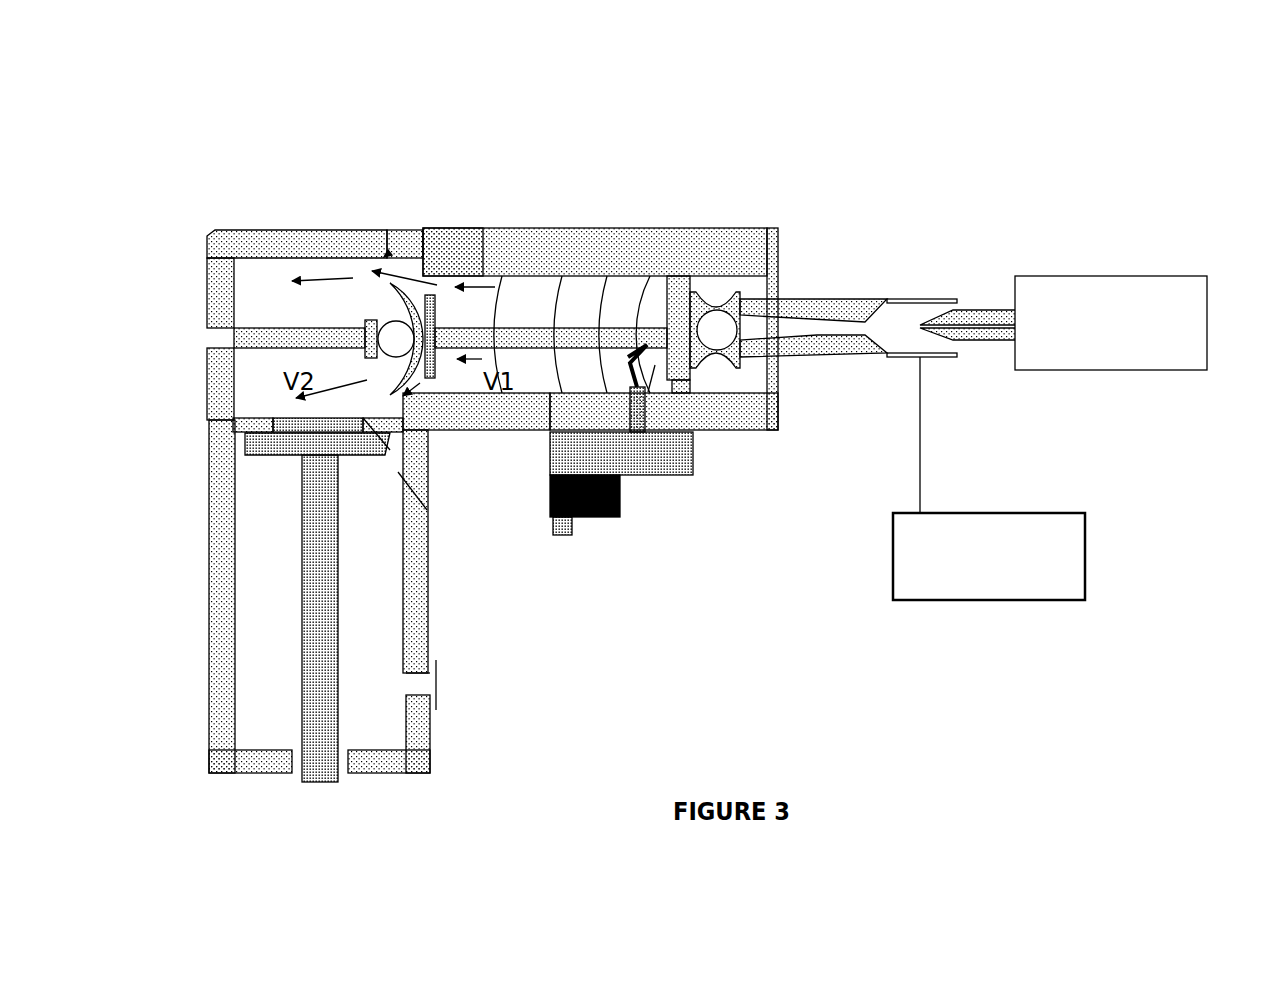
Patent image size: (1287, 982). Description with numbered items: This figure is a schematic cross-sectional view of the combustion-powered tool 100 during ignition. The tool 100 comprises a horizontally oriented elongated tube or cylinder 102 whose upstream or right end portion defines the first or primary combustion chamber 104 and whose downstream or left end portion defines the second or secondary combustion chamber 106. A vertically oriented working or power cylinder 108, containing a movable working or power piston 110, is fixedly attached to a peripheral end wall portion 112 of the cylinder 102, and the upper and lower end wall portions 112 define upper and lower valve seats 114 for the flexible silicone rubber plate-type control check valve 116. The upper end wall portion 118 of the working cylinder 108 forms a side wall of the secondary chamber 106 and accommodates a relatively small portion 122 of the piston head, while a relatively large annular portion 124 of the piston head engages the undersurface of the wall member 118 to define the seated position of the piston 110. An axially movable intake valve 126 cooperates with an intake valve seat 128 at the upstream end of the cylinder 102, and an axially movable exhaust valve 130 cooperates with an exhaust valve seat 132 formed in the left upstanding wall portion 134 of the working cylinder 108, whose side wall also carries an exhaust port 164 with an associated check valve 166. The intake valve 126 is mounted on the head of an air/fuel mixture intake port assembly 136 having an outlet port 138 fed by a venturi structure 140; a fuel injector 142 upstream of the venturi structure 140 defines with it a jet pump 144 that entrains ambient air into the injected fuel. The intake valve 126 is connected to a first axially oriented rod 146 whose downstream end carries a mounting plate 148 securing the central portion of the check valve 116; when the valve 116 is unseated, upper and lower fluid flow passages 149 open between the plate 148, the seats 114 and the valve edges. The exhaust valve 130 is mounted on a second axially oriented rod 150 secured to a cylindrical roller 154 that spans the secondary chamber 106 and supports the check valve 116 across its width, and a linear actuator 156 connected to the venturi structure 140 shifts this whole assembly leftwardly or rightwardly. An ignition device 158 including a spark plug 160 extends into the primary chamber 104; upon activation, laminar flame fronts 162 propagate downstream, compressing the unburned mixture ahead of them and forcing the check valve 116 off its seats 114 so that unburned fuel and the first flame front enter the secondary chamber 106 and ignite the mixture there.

The combustion-powered tool 100 is at (782, 162).
The elongated tube or cylinder 102 is at (665, 252).
The first or primary combustion chamber 104 is at (520, 297).
The second or secondary combustion chamber 106 is at (257, 303).
The working or power cylinder 108 is at (420, 623).
The working or power piston 110 is at (310, 632).
The end wall portion 112 is at (423, 244).
The valve seat 114 is at (425, 405).
The flexible silicone rubber plate-type control check valve 116 is at (403, 387).
The upper end wall portion of working cylinder 118 is at (293, 425).
The first relatively small portion of piston head 122 is at (262, 431).
The second relatively large annular portion of piston head 124 is at (275, 452).
The intake valve 126 is at (683, 308).
The intake valve seat 128 is at (680, 388).
The exhaust valve 130 is at (210, 352).
The exhaust valve seat 132 is at (212, 277).
The left vertically upstanding wall portion 134 is at (222, 640).
The air/fuel mixture intake port assembly 136 is at (713, 303).
The air/fuel mixture outlet port 138 is at (717, 335).
The venturi structure 140 is at (916, 242).
The fuel injector 142 is at (1176, 297).
The jet pump 144 is at (967, 297).
The first axially oriented rod 146 is at (580, 333).
The mounting plate 148 is at (430, 372).
The fluid flow passages 149 is at (480, 245).
The second axially oriented rod 150 is at (258, 337).
The cylindrical roller 154 is at (385, 335).
The linear actuator 156 is at (997, 587).
The ignition device 158 is at (575, 457).
The spark plug 160 is at (636, 423).
The laminar flame fronts 162 is at (553, 310).
The exhaust port 164 is at (413, 683).
The check valve 166 is at (438, 685).